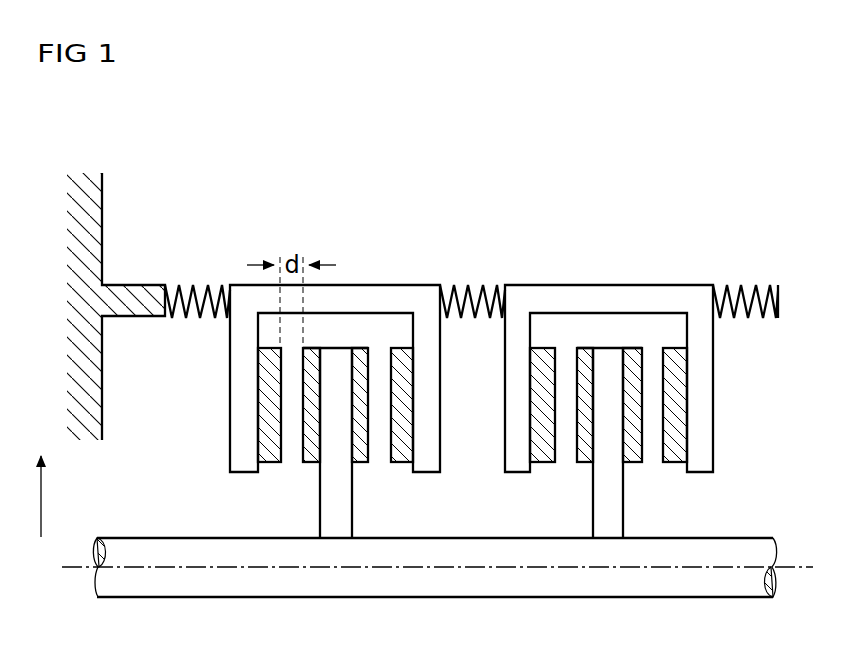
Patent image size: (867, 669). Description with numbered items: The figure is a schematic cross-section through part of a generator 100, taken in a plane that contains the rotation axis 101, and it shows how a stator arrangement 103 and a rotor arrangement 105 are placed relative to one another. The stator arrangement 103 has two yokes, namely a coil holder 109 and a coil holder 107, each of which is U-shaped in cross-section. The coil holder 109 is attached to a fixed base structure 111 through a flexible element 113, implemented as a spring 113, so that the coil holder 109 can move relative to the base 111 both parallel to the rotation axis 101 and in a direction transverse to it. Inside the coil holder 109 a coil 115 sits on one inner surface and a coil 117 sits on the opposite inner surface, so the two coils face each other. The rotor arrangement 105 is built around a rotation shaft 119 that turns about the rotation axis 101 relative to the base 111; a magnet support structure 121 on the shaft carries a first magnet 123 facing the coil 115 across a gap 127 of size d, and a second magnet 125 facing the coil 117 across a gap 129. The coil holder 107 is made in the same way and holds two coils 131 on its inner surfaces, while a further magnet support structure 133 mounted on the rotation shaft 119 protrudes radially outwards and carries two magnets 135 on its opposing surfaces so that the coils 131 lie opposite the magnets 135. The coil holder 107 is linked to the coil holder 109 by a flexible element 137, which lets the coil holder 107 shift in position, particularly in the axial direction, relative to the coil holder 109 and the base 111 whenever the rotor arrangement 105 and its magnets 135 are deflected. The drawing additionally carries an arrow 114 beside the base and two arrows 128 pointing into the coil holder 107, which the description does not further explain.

The generator 100 is at (694, 186).
The rotation axis 101 is at (802, 568).
The stator arrangement 103 is at (770, 373).
The rotor arrangement 105 is at (664, 525).
The coil holder 107 is at (678, 295).
The coil holder 109 is at (398, 297).
The base structure 111 is at (93, 213).
The flexible element 113 is at (197, 288).
The vibration direction 114 is at (41, 503).
The coil 115 is at (270, 463).
The coil 117 is at (407, 456).
The rotation shaft 119 is at (473, 588).
The magnet support structure 121 is at (318, 533).
The first magnet 123 is at (315, 352).
The second magnet 125 is at (364, 352).
The gap 127 is at (291, 458).
The gap 128 is at (566, 346).
The gap 129 is at (381, 458).
The coils 131 is at (545, 458).
The magnet support structure 133 is at (596, 512).
The magnets 135 is at (584, 458).
The flexible element 137 is at (478, 300).